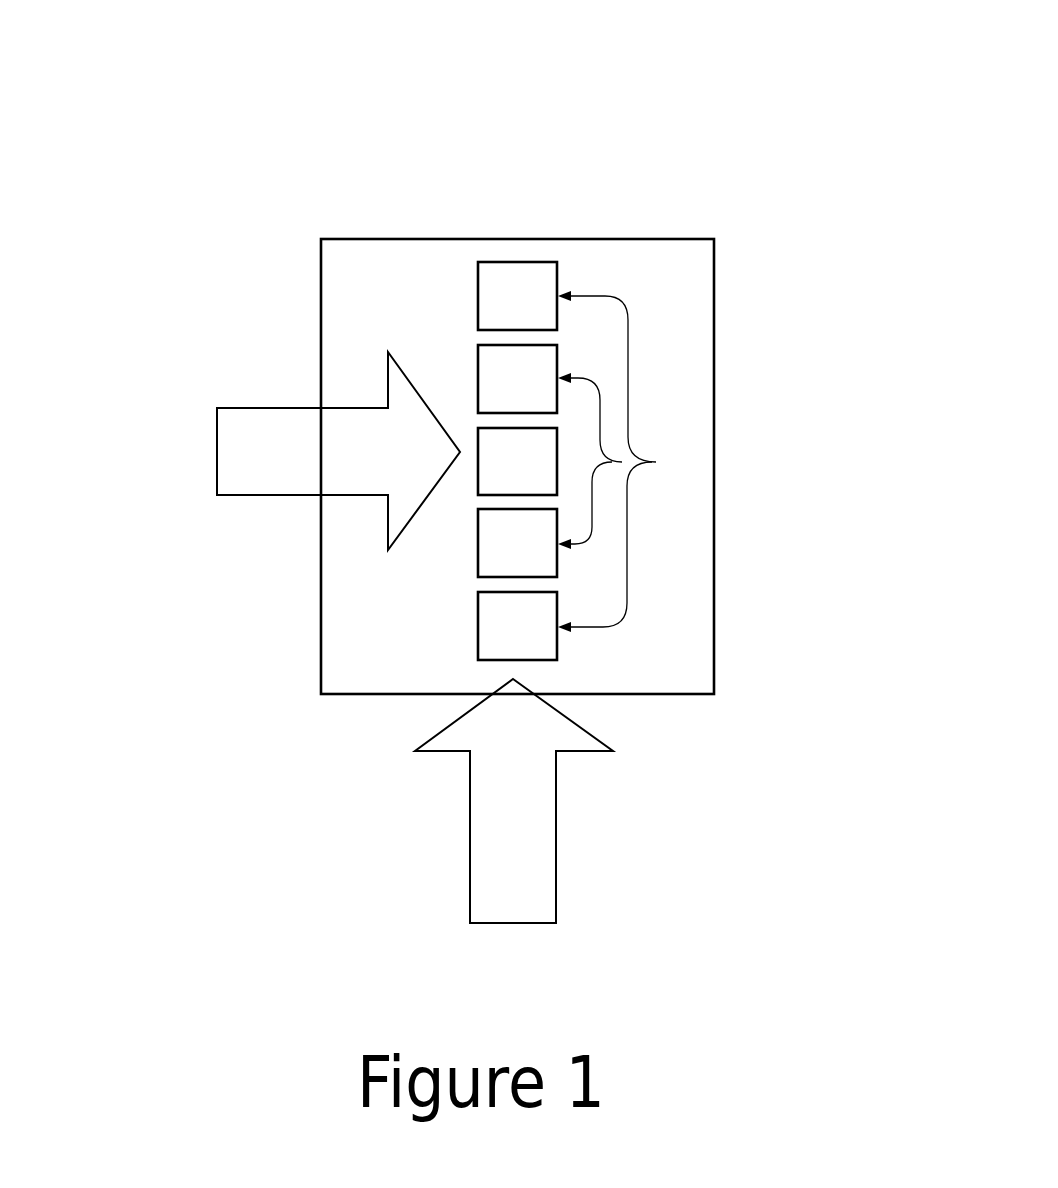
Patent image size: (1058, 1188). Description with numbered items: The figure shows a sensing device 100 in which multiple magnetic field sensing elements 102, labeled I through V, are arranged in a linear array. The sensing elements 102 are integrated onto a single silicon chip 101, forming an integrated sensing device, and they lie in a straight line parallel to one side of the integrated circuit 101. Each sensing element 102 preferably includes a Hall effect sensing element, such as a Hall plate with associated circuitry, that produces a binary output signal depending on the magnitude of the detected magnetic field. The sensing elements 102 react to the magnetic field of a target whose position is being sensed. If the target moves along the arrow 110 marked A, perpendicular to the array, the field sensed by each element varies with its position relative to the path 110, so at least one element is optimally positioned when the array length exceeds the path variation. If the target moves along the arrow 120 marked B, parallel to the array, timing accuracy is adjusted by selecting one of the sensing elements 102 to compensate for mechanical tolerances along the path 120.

The sensing device 100 is at (368, 145).
The silicon chip 101 is at (602, 227).
The magnetic field sensing elements 102 is at (570, 462).
The arrow marked A 110 is at (260, 396).
The arrow marked B 120 is at (554, 865).